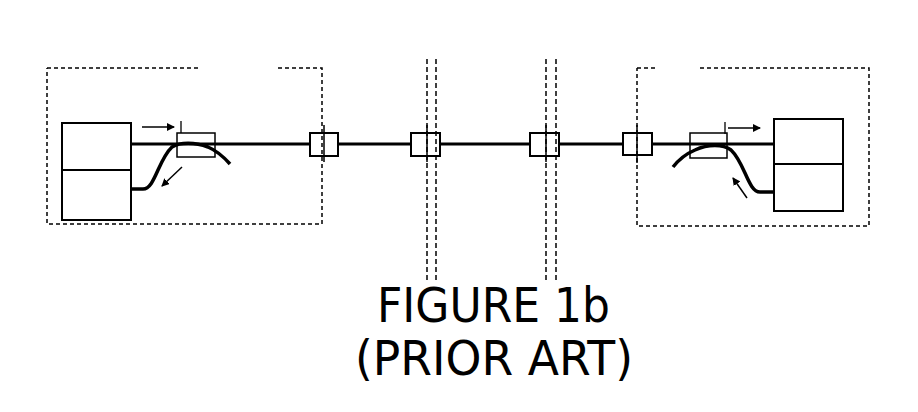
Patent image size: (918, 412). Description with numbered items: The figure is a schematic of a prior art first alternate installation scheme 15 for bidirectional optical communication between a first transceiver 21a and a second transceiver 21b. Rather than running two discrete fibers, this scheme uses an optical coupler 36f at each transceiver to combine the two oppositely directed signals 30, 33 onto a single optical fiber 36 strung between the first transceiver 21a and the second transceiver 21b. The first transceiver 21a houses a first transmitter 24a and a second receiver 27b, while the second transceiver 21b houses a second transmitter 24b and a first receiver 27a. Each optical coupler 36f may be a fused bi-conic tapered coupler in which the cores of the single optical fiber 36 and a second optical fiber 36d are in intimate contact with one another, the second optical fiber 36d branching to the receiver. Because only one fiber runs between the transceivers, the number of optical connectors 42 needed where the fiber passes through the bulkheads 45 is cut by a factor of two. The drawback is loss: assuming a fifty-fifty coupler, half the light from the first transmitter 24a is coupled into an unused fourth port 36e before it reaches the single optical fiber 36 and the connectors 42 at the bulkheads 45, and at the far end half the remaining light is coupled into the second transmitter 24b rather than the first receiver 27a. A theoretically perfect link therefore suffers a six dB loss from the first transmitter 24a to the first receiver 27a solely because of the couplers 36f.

The first alternate installation scheme 15 is at (390, 42).
The first transceiver 21a is at (98, 63).
The second transceiver 21b is at (787, 60).
The first transmitter 24a is at (115, 120).
The second transmitter 24b is at (804, 217).
The first receiver 27a is at (804, 118).
The second receiver 27b is at (88, 222).
The signal 30 is at (165, 123).
The signal 33 is at (170, 180).
The single optical fiber 36 is at (494, 142).
The second optical fiber 36d is at (157, 192).
The unused fourth port 36e is at (233, 163).
The optical coupler 36f is at (213, 132).
The optical connectors 42 is at (312, 133).
The bulkheads 45 is at (427, 80).